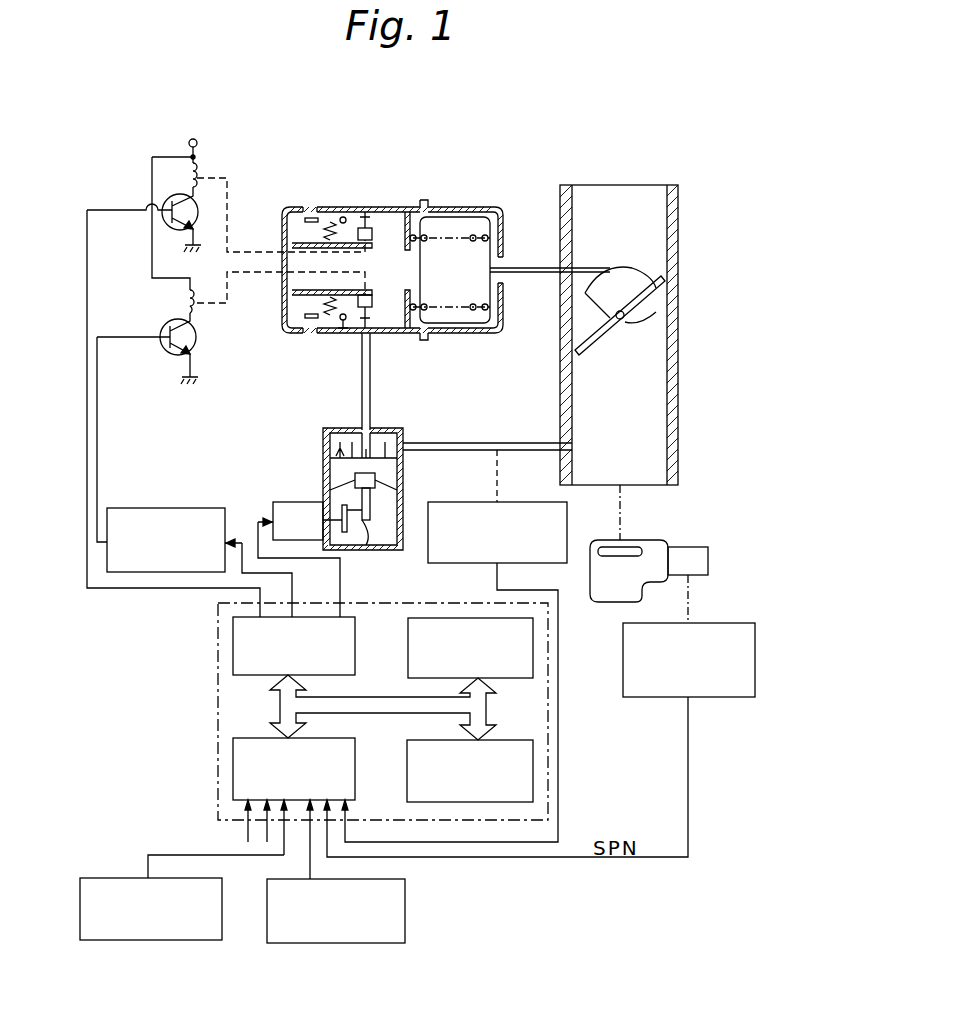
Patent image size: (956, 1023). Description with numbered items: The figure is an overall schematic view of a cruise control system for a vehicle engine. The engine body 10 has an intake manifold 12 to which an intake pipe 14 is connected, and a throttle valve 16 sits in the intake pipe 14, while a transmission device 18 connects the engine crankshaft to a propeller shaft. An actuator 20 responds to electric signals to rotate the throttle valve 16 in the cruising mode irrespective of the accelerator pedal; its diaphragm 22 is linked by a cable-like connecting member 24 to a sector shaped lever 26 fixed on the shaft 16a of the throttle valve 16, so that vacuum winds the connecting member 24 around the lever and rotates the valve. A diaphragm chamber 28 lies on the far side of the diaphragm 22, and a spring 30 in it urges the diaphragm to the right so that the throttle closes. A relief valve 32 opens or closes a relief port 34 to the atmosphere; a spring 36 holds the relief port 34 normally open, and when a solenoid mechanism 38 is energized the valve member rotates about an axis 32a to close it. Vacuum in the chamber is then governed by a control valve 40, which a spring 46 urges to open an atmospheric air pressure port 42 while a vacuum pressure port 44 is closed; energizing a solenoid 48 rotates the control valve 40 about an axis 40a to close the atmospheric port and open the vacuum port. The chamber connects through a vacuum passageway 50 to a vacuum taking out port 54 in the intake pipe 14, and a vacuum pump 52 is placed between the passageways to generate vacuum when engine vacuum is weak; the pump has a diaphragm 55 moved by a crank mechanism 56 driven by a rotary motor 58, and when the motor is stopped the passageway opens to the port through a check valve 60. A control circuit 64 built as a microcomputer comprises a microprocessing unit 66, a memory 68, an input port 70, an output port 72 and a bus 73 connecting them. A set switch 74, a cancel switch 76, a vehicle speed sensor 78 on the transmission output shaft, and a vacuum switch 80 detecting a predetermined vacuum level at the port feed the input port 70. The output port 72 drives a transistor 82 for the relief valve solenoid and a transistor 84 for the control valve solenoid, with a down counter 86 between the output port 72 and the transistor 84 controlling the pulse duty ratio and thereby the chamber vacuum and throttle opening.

The engine body 10 is at (661, 540).
The intake manifold 12 is at (610, 543).
The intake pipe 14 is at (680, 400).
The throttle valve 16 is at (592, 350).
The shaft of the throttle valve 16a is at (630, 323).
The transmission device 18 is at (702, 547).
The actuator 20 is at (462, 199).
The diaphragm 22 is at (487, 225).
The connecting member 24 is at (531, 274).
The sector shaped lever 26 is at (633, 282).
The diaphragm chamber 28 is at (464, 277).
The spring 30 is at (474, 311).
The relief valve 32 is at (336, 216).
The axis 32a is at (345, 218).
The relief port 34 is at (312, 207).
The spring 36 is at (322, 240).
The solenoid mechanism 38 is at (373, 236).
The control valve 40 is at (341, 324).
The axis 40a is at (352, 325).
The atmospheric air pressure port 42 is at (313, 327).
The vacuum pressure port 44 is at (371, 338).
The spring 46 is at (322, 300).
The solenoid 48 is at (371, 300).
The vacuum passageway 50 is at (372, 388).
The vacuum pump 52 is at (412, 494).
The vacuum taking out port 54 is at (573, 448).
The diaphragm 55 is at (332, 485).
The crank mechanism 56 is at (375, 551).
The rotary motor 58 is at (285, 501).
The check valve 60 is at (401, 430).
The control circuit 64 is at (218, 703).
The microprocessing unit 66 is at (462, 618).
The memory 68 is at (517, 740).
The input port 70 is at (356, 768).
The output port 72 is at (356, 634).
The bus 73 is at (388, 697).
The set switch 74 is at (368, 943).
The cancel switch 76 is at (190, 941).
The vehicle speed sensor 78 is at (716, 623).
The vacuum switch 80 is at (537, 502).
The transistor 82 is at (166, 203).
The transistor 84 is at (166, 351).
The down counter 86 is at (170, 508).